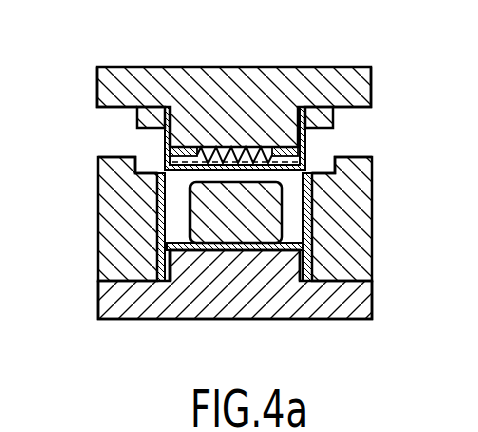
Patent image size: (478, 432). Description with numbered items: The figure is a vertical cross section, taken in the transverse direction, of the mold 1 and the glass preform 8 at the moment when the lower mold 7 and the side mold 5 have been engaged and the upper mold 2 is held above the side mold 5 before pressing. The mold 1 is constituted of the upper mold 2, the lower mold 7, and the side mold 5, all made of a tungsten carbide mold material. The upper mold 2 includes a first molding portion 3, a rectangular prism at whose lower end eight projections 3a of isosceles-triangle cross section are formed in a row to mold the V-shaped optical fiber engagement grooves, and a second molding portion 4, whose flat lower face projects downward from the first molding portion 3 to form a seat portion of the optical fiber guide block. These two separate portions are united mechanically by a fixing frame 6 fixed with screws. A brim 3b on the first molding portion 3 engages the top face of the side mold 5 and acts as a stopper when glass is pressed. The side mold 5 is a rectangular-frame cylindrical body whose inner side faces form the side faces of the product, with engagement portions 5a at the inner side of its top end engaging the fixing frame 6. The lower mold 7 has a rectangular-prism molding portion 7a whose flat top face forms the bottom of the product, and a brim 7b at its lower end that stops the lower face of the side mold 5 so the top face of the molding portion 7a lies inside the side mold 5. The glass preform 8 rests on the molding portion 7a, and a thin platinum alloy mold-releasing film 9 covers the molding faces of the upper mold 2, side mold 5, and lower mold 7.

The mold 1 is at (357, 60).
The upper mold 2 is at (263, 66).
The first molding portion 3 is at (298, 83).
The projections 3a is at (307, 155).
The brim 3b is at (105, 92).
The second molding portion 4 is at (173, 153).
The side mold 5 is at (108, 243).
The engagement portions 5a is at (107, 158).
The fixing frame 6 is at (135, 126).
The lower mold 7 is at (232, 292).
The molding portion 7a is at (278, 270).
The brim 7b is at (107, 299).
The glass preform 8 is at (270, 233).
The mold-releasing film 9 is at (197, 166).